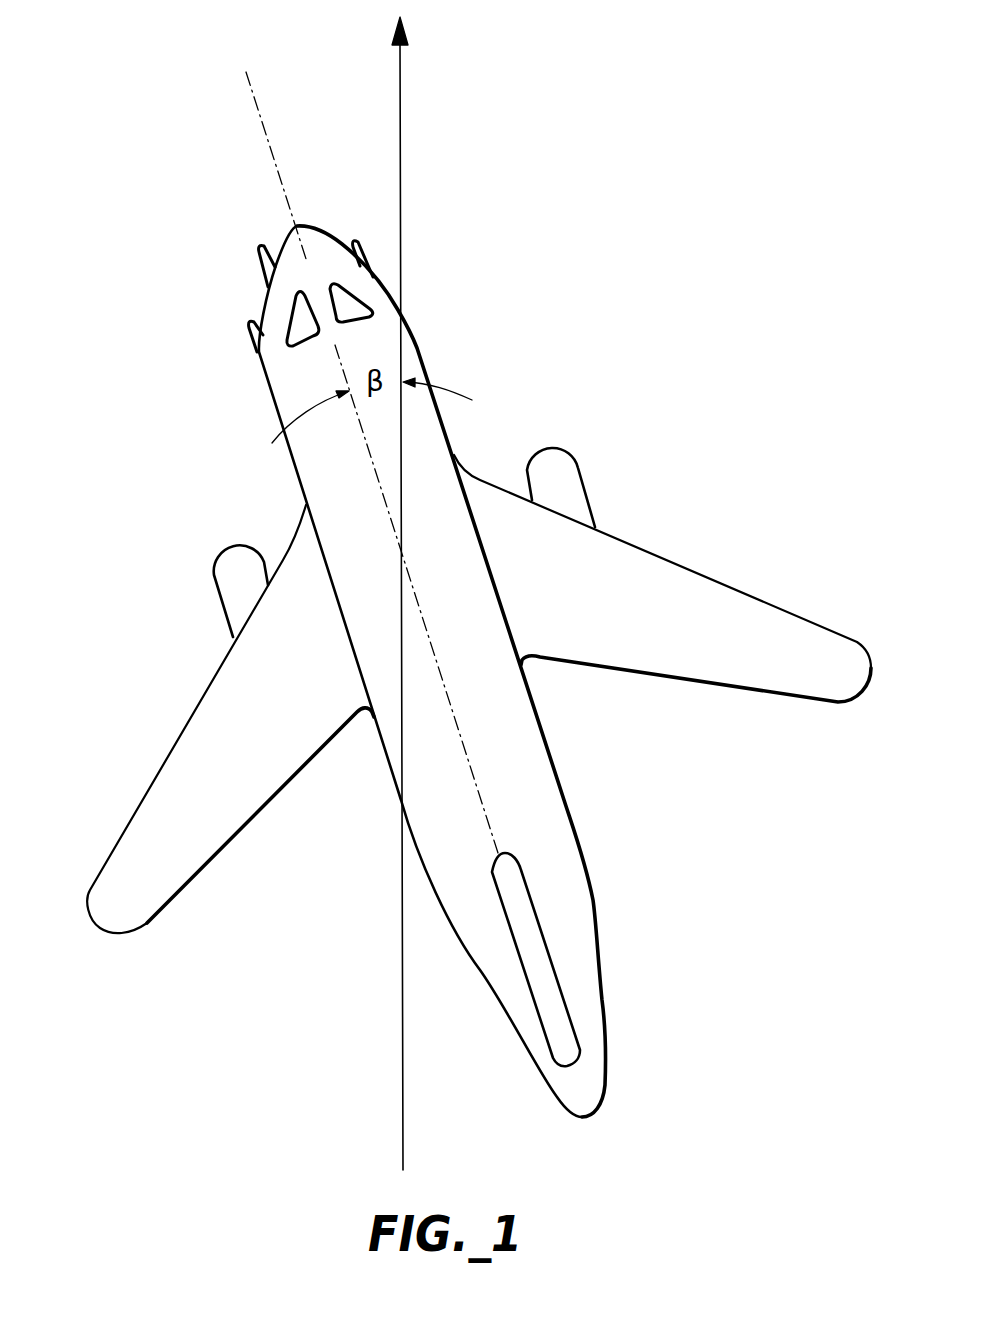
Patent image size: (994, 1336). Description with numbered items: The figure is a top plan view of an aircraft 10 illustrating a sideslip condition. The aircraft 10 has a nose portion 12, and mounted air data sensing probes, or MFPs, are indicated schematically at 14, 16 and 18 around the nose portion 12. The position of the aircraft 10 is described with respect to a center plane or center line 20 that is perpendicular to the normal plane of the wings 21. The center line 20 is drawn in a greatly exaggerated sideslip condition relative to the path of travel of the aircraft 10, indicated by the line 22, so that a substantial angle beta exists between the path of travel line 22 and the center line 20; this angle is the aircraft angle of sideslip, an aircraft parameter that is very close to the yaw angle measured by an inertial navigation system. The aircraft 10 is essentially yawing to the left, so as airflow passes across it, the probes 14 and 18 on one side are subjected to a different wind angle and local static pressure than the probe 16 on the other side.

The aircraft 10 is at (601, 893).
The nose portion 12 is at (293, 247).
The air data sensing probe 14 is at (260, 267).
The air data sensing probe 16 is at (368, 250).
The air data sensing probe 18 is at (248, 348).
The center line 20 is at (470, 770).
The wings 21 is at (180, 763).
The path of travel line 22 is at (400, 172).